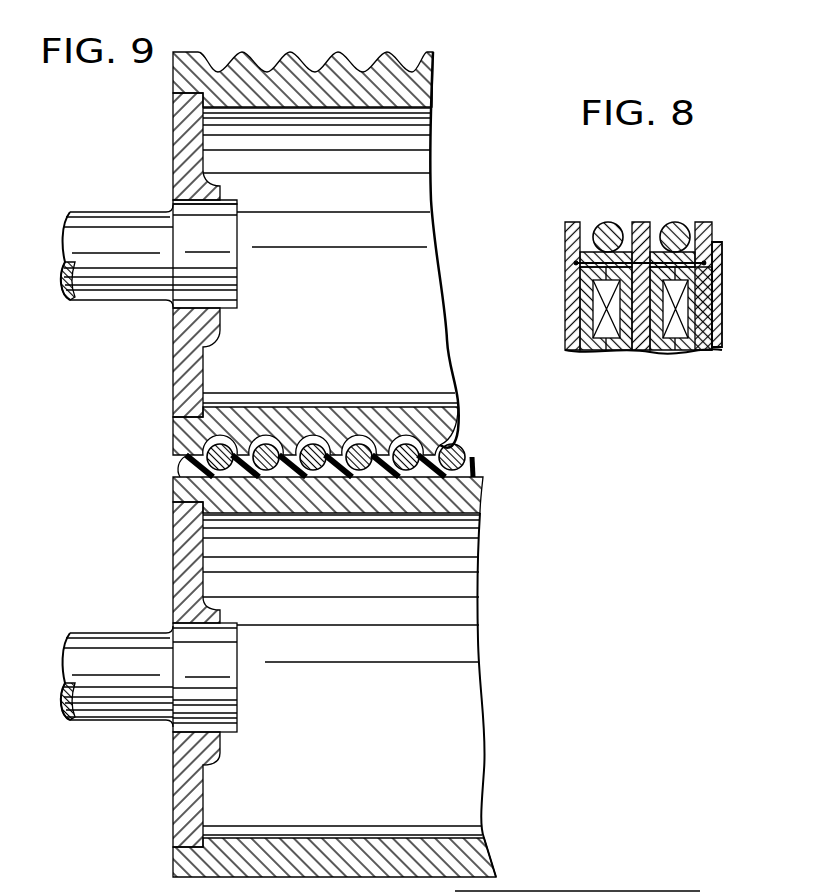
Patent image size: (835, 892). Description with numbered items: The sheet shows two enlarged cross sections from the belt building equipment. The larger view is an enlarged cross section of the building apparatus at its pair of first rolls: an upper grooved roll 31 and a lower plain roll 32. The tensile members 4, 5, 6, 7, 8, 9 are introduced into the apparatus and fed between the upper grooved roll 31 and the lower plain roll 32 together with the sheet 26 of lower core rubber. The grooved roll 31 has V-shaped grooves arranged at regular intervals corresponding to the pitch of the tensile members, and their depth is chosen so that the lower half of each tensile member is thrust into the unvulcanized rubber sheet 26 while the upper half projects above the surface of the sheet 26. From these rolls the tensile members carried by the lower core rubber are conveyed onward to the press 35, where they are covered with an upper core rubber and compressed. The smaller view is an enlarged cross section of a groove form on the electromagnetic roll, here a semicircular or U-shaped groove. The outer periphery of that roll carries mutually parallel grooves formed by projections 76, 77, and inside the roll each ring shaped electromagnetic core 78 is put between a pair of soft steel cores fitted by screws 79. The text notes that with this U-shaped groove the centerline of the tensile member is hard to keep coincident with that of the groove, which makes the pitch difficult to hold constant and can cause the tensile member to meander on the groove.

In FIG. 9, the upper grooved roll 31 is at (424, 82).
In FIG. 9, the lower plain roll 32 is at (473, 497).
In FIG. 9, the sheet of lower core rubber 26 is at (478, 466).
In FIG. 9, the tensile member 4 is at (220, 457).
In FIG. 8, the tensile member 4 is at (608, 237).
In FIG. 9, the tensile member 5 is at (266, 457).
In FIG. 8, the tensile member 5 is at (675, 237).
In FIG. 9, the tensile member 6 is at (313, 457).
In FIG. 8, the tensile member 6 is at (677, 222).
In FIG. 9, the roller 7 is at (359, 457).
In FIG. 9, the roller 8 is at (406, 457).
In FIG. 9, the roller 9 is at (460, 442).
In FIG. 9, the press 35 is at (722, 891).
In FIG. 8, the projection 76 is at (712, 228).
In FIG. 8, the projection 77 is at (641, 222).
In FIG. 8, the ring shaped electromagnetic core 78 is at (720, 275).
In FIG. 8, the screw 79 is at (703, 265).